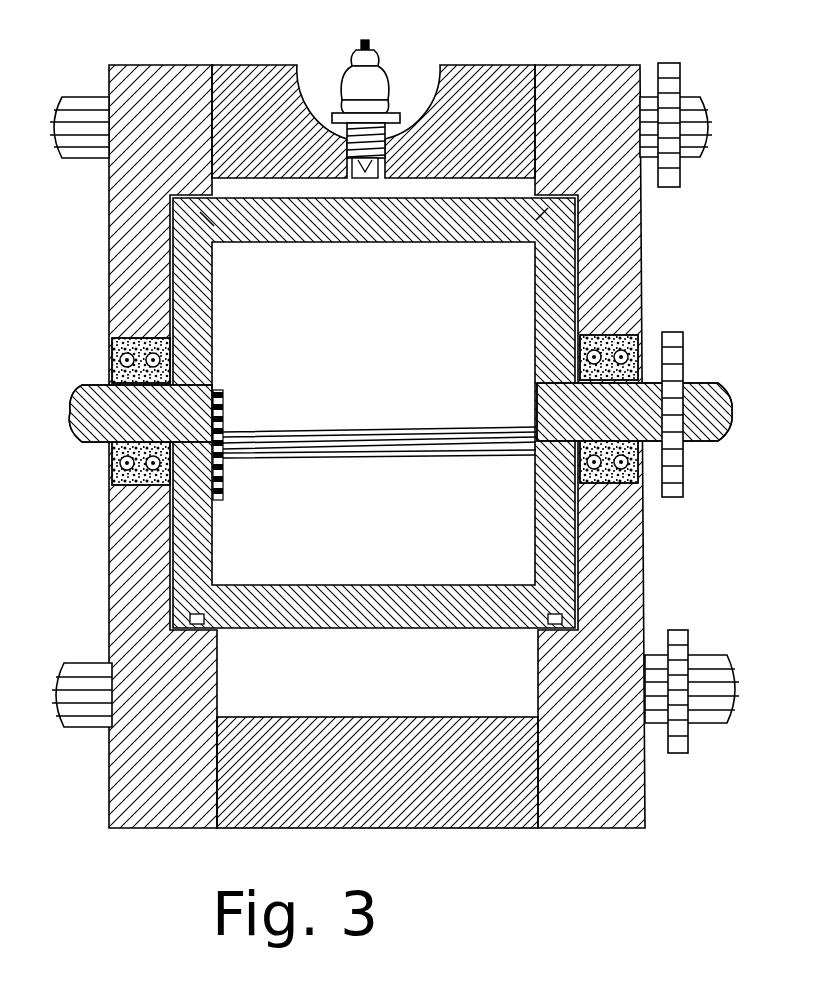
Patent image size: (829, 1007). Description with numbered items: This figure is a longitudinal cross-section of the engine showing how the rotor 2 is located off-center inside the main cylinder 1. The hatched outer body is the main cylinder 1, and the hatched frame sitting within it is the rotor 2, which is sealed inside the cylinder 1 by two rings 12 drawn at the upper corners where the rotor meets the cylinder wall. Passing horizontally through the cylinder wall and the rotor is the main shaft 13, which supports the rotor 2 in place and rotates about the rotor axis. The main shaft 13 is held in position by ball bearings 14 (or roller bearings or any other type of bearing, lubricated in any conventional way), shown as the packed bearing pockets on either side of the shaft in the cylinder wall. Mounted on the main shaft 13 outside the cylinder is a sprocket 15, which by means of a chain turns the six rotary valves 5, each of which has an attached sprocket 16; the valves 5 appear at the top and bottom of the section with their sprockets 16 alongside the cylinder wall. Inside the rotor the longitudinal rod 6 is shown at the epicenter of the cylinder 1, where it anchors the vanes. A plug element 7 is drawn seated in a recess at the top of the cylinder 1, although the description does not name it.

The main cylinder 1 is at (652, 264).
The rotor 2 is at (408, 256).
The rotary valves 5 is at (726, 129).
The longitudinal rod 6 is at (348, 471).
The spark plug 7 is at (400, 68).
The rings 12 is at (226, 246).
The main shaft 13 is at (745, 411).
The ball bearings 14 is at (104, 481).
The sprocket 15 is at (697, 478).
The sprockets 16 is at (695, 80).